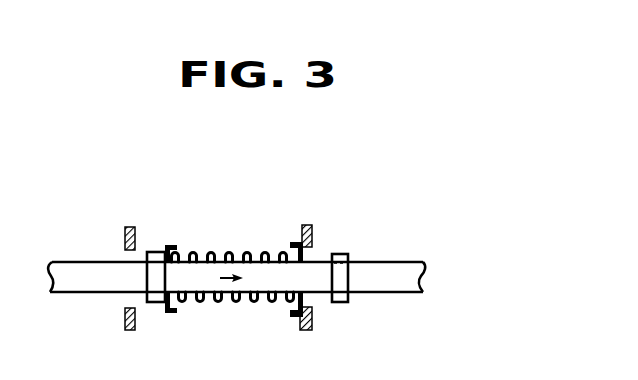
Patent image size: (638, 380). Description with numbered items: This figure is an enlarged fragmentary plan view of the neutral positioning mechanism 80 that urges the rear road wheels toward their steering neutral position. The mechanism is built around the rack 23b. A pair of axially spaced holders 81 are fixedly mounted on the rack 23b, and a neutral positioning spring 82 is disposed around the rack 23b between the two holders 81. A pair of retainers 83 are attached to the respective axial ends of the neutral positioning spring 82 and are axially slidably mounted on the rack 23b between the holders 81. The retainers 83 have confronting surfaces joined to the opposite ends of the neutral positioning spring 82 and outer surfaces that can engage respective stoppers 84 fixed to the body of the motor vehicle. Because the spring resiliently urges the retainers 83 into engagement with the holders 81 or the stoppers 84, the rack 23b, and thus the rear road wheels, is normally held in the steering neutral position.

The neutral positioning mechanism 80 is at (387, 170).
The rack 23b is at (424, 274).
The holders 81 is at (157, 252).
The neutral positioning spring 82 is at (247, 252).
The retainers 83 is at (172, 244).
The stoppers 84 is at (128, 227).